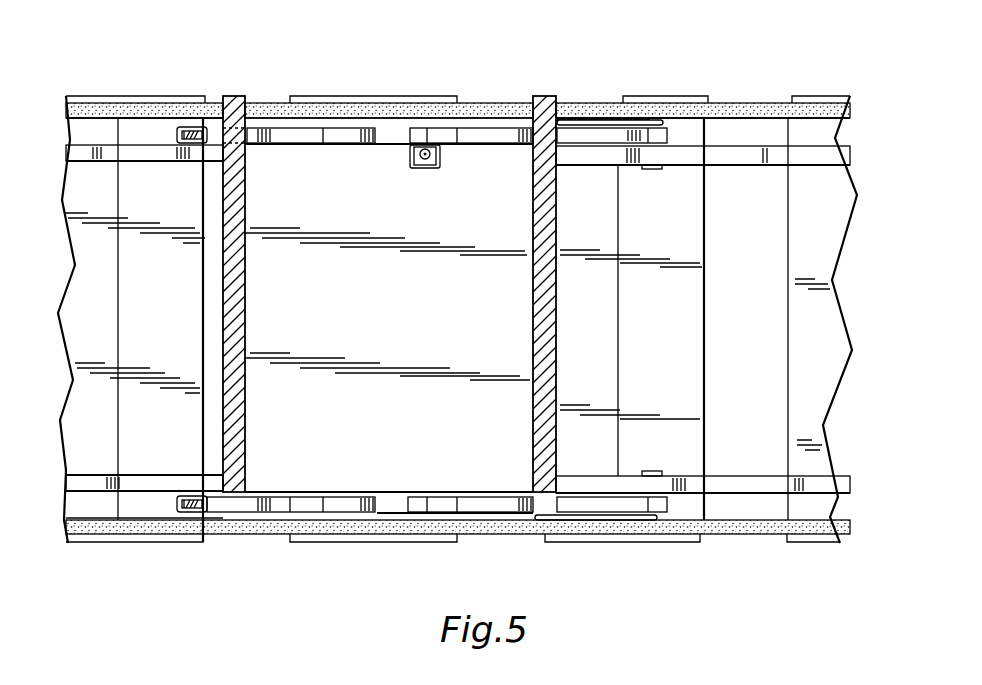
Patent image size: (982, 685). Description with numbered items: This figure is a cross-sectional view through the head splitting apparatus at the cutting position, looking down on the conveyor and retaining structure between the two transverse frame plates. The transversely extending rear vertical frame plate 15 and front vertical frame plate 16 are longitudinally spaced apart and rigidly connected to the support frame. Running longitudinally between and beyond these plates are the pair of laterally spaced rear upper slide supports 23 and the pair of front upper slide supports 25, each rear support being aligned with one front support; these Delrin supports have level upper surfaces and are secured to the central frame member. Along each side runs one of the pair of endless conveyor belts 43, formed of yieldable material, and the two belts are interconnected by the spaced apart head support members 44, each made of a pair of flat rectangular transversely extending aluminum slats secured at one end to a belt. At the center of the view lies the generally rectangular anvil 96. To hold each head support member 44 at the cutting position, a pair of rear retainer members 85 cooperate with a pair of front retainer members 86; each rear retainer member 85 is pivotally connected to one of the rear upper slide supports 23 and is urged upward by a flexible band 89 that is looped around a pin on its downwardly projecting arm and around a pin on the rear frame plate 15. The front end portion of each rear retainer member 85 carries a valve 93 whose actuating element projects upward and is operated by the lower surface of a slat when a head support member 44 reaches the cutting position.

The rear vertical frame plate 15 is at (532, 273).
The front vertical frame plate 16 is at (244, 288).
The rear upper slide support 23 is at (690, 158).
The front upper slide support 25 is at (153, 156).
The endless conveyor belt 43 is at (742, 108).
The head support member 44 is at (186, 383).
The rear retainer member 85 is at (599, 148).
The front retainer member 86 is at (314, 143).
The flexible band 89 is at (588, 125).
The valve 93 is at (424, 170).
The anvil 96 is at (400, 326).